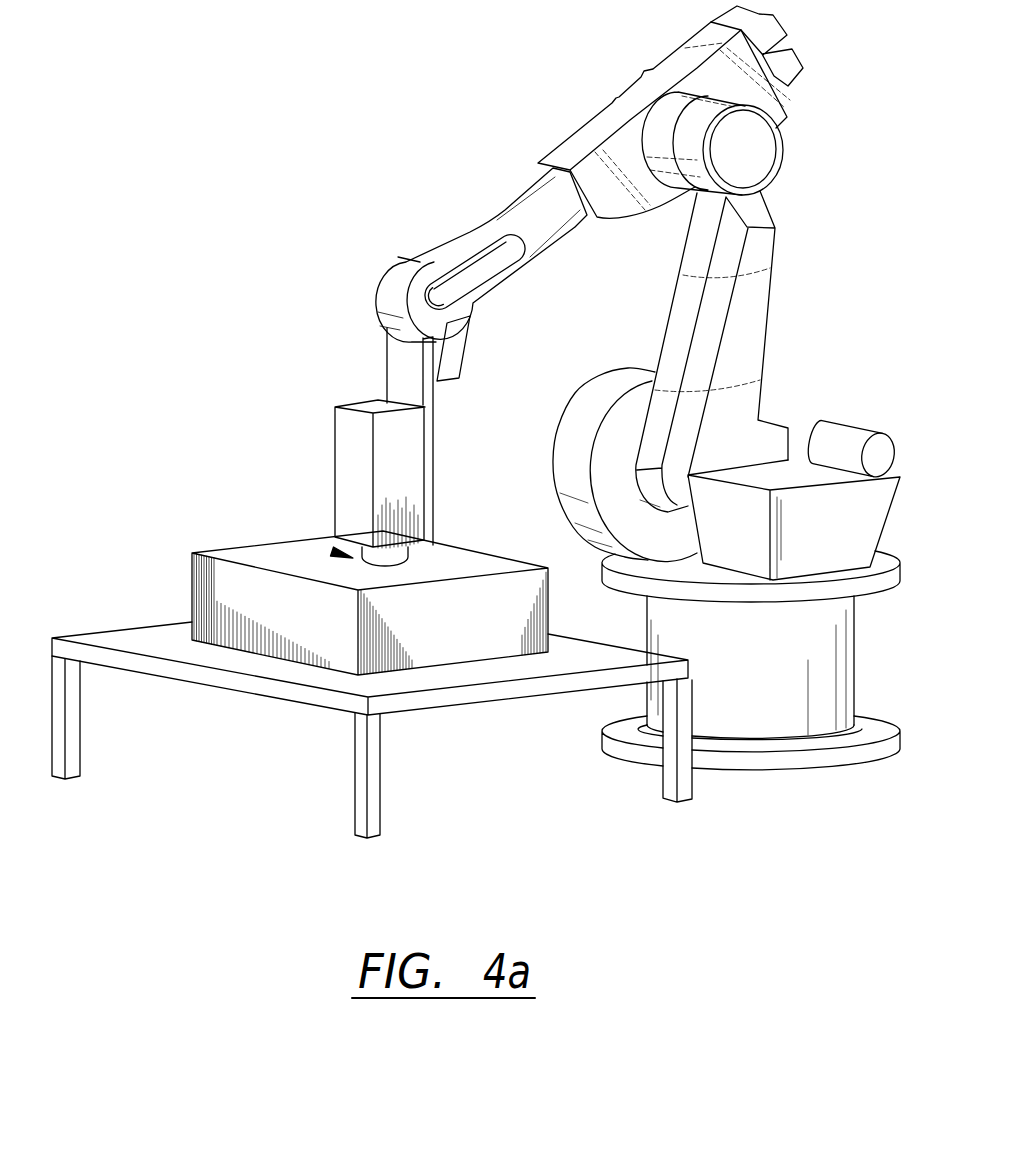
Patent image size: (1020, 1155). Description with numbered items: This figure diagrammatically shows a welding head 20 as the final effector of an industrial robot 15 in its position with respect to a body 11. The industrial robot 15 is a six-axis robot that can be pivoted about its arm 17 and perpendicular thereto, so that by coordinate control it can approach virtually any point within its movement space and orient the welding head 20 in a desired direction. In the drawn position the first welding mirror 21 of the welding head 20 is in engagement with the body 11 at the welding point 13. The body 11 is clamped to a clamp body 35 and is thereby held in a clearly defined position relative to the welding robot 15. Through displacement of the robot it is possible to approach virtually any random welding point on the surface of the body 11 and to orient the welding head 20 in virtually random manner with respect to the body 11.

The body 11 is at (437, 618).
The welding point 13 is at (331, 551).
The industrial robot 15 is at (588, 388).
The robot arm 17 is at (523, 207).
The welding head 20 is at (348, 453).
The first welding mirror 21 is at (410, 553).
The clamp body 35 is at (247, 667).